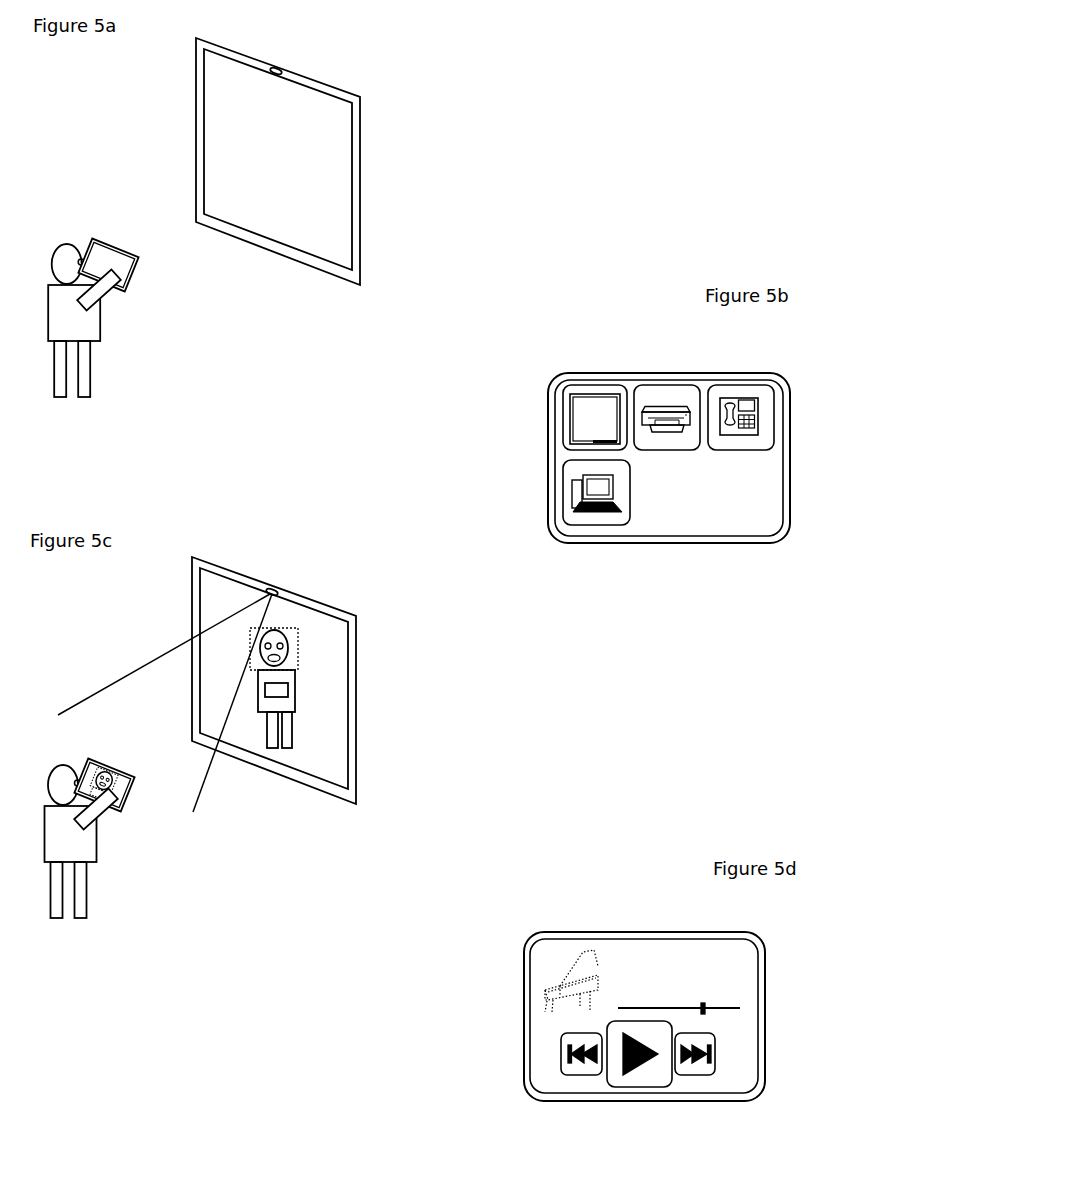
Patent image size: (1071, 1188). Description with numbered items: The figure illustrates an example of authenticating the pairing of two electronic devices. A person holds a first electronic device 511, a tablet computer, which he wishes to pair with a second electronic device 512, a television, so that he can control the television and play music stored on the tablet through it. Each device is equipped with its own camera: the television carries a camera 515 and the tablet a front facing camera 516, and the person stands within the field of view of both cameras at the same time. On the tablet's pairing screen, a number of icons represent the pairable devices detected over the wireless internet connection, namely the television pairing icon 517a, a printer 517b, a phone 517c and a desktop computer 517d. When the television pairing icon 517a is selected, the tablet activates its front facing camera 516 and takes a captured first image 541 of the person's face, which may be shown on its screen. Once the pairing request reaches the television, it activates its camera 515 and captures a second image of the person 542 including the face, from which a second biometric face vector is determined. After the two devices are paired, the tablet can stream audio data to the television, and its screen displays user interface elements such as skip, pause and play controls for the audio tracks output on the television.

In FIG. 5A, the first electronic device 511 is at (129, 306).
In FIG. 5B, the first electronic device 511 is at (738, 564).
In FIG. 5C, the first electronic device 511 is at (118, 815).
In FIG. 5D, the first electronic device 511 is at (685, 1110).
In FIG. 5A, the second electronic device 512 is at (392, 155).
In FIG. 5C, the second electronic device 512 is at (362, 742).
In FIG. 5A, the camera 515 is at (283, 69).
In FIG. 5C, the camera 515 is at (280, 590).
In FIG. 5A, the front facing camera 516 is at (110, 247).
In FIG. 5B, the television pairing icon 517a is at (568, 417).
In FIG. 5B, the printer 517b is at (662, 388).
In FIG. 5B, the phone 517c is at (748, 388).
In FIG. 5B, the desktop computer 517d is at (585, 513).
In FIG. 5C, the captured first image 541 is at (115, 787).
In FIG. 5C, the second image of the person 542 is at (300, 693).